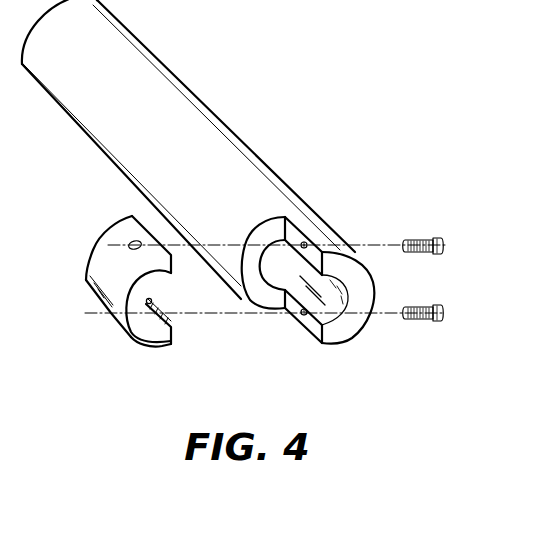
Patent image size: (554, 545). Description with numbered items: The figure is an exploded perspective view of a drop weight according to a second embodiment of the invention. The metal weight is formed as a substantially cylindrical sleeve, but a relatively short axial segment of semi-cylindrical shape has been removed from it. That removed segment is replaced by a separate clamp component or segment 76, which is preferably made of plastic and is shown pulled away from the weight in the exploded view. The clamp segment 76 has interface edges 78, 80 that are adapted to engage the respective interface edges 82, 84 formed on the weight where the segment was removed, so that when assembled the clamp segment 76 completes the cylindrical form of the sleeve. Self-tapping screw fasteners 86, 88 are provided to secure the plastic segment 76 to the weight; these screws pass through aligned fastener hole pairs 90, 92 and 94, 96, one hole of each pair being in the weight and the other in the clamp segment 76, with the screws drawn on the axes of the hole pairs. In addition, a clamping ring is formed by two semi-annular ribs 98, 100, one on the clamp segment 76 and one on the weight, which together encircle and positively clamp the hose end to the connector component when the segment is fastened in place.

The clamp segment 76 is at (90, 268).
The interface edge 78 is at (172, 261).
The interface edge 80 is at (172, 336).
The interface edge 82 is at (318, 255).
The interface edge 84 is at (318, 334).
The self-tapping screw fastener 86 is at (420, 239).
The self-tapping screw fastener 88 is at (425, 321).
The fastener hole 90 is at (133, 243).
The fastener hole 92 is at (112, 318).
The fastener hole 94 is at (306, 241).
The fastener hole 96 is at (301, 316).
The semi-annular rib 98 is at (152, 301).
The semi-annular rib 100 is at (350, 301).